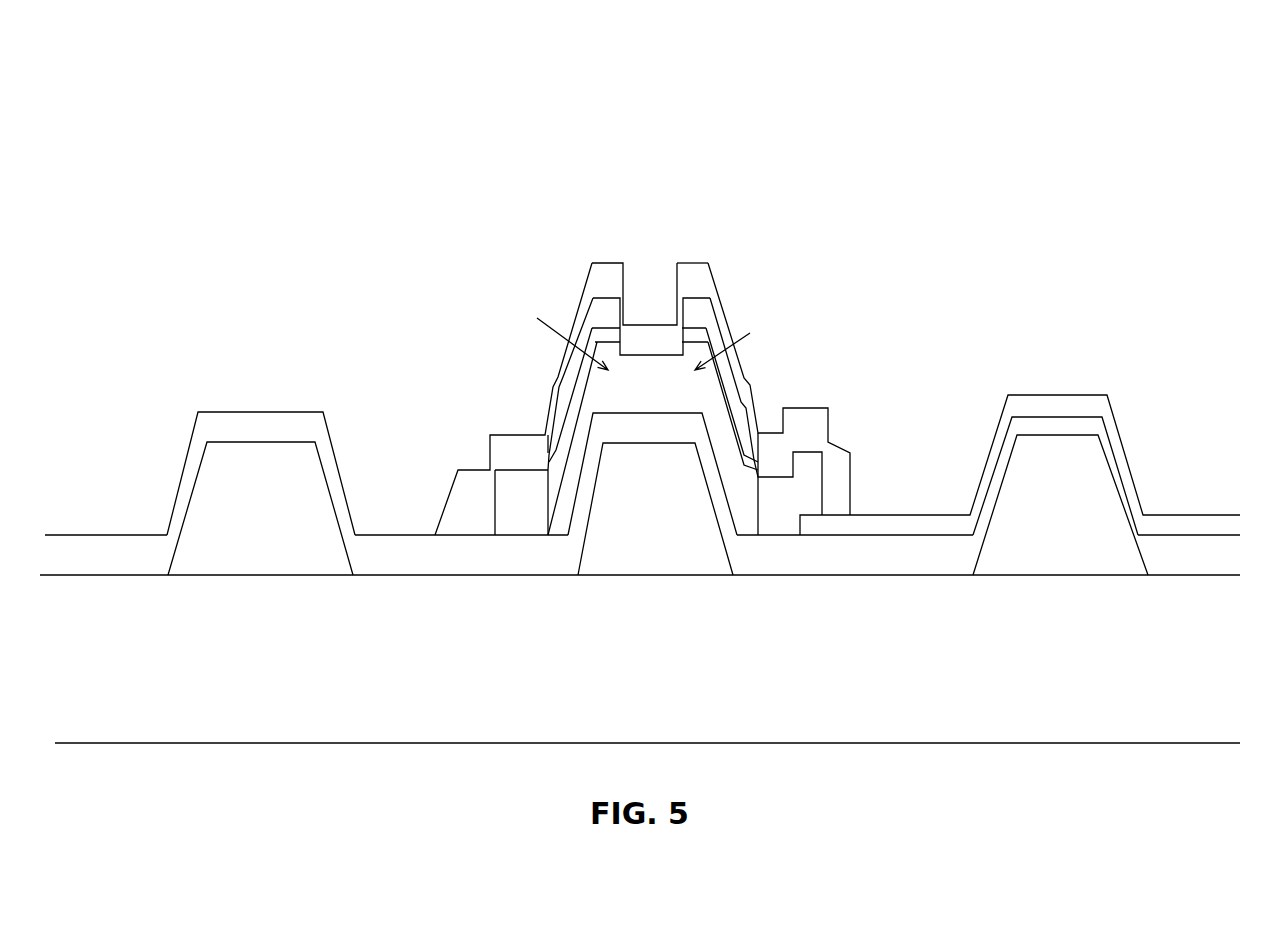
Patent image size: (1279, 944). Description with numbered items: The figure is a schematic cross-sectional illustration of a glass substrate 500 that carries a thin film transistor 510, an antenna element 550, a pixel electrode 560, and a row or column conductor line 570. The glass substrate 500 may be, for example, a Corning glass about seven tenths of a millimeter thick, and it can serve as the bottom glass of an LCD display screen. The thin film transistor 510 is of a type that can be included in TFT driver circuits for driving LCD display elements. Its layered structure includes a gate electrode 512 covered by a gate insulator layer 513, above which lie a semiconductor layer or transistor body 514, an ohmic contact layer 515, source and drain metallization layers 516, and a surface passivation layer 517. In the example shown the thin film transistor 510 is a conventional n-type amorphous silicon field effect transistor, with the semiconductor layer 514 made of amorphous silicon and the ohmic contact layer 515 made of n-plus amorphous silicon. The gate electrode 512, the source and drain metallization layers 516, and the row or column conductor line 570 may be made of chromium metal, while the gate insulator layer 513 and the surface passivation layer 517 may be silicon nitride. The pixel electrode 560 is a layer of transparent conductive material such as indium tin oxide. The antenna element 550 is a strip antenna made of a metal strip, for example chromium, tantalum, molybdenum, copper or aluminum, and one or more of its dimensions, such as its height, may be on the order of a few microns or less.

The glass substrate 500 is at (283, 745).
The thin film transistor 510 is at (668, 141).
The gate electrode 512 is at (627, 528).
The gate insulator layer 513 is at (608, 433).
The semiconductor layer 514 is at (610, 387).
The ohmic contact layer 515 is at (606, 318).
The source and drain metallization layers 516 is at (610, 306).
The surface passivation layer 517 is at (700, 277).
The antenna element 550 is at (293, 513).
The pixel electrode 560 is at (1088, 528).
The row or column conductor line 570 is at (940, 525).